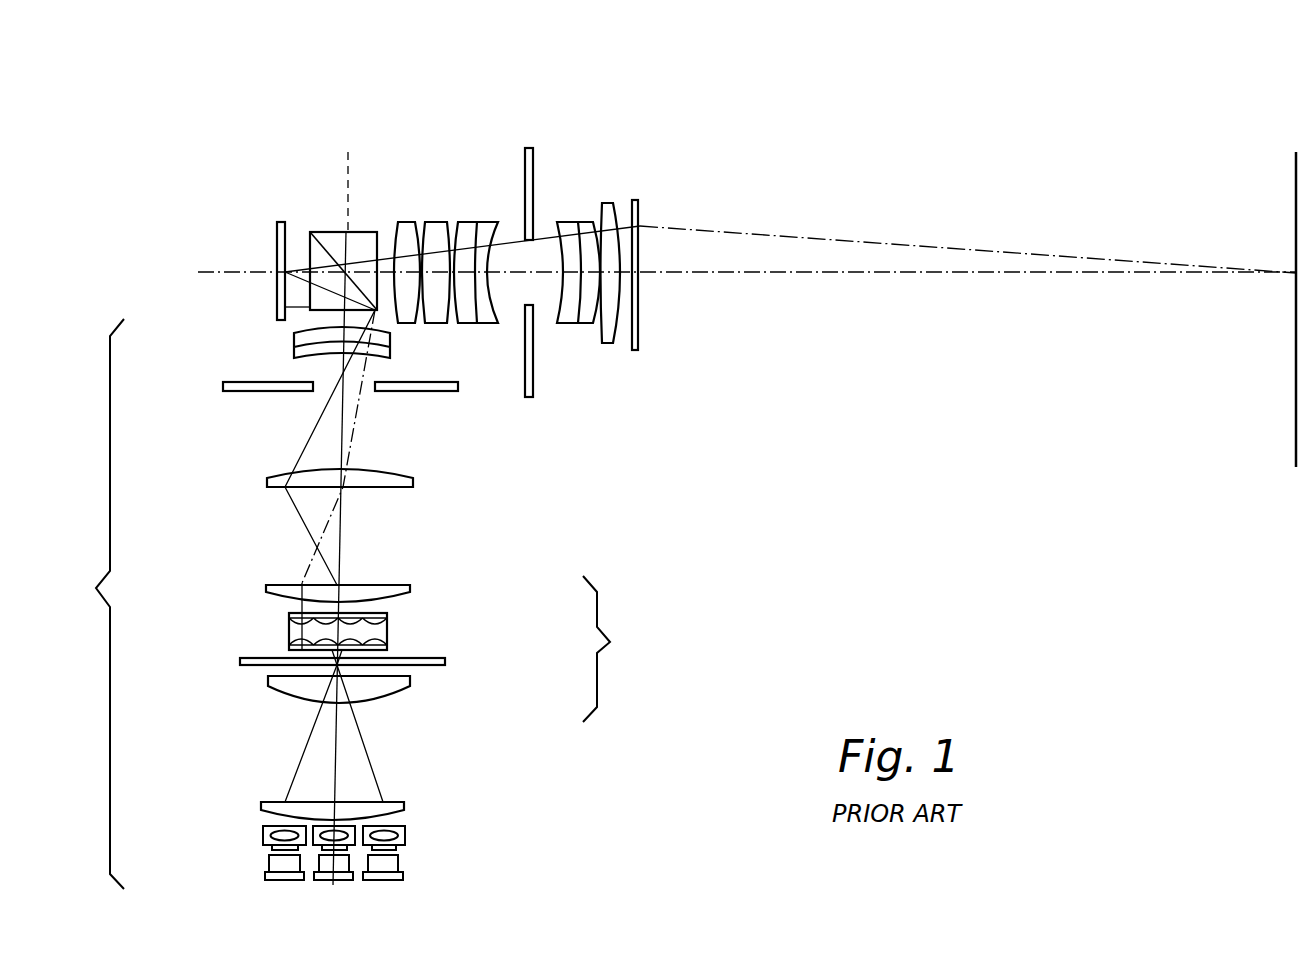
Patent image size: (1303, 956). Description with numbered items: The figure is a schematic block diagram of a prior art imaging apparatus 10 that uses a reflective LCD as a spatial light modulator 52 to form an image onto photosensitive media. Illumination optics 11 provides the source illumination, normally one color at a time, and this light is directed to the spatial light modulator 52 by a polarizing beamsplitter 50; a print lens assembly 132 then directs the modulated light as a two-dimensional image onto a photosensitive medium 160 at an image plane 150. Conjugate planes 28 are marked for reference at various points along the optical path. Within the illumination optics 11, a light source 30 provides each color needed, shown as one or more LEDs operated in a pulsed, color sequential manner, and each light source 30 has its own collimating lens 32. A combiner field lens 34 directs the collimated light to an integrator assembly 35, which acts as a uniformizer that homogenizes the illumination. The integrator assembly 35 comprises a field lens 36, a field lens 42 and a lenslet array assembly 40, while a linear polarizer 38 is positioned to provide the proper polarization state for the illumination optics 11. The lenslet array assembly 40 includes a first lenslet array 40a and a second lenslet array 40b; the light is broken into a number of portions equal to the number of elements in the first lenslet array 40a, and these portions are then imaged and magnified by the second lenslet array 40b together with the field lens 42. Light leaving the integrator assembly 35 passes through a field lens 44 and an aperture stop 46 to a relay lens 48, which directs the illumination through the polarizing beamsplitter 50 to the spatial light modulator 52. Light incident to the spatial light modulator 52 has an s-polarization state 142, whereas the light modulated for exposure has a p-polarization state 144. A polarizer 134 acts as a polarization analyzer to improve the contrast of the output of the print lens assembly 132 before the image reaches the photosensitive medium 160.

The imaging apparatus 10 is at (163, 145).
The illumination optics 11 is at (98, 604).
The conjugate planes 28 is at (285, 220).
The light source 30 is at (403, 862).
The collimating lens 32 is at (408, 830).
The combiner field lens 34 is at (397, 808).
The integrator assembly 35 is at (610, 642).
The field lens 36 is at (390, 693).
The linear polarizer 38 is at (437, 665).
The lenslet array assembly 40 is at (411, 635).
The first lenslet array 40a is at (390, 645).
The second lenslet array 40b is at (390, 615).
The field lens 42 is at (412, 586).
The field lens 44 is at (415, 482).
The aperture stop 46 is at (450, 392).
The relay lens 48 is at (297, 347).
The polarizing beamsplitter 50 is at (368, 217).
The spatial light modulator 52 is at (275, 220).
The print lens assembly 132 is at (515, 226).
The polarizer 134 is at (638, 203).
The s-polarization state 142 is at (223, 274).
The p-polarization state 144 is at (347, 178).
The image plane 150 is at (1296, 388).
The photosensitive medium 160 is at (1293, 220).